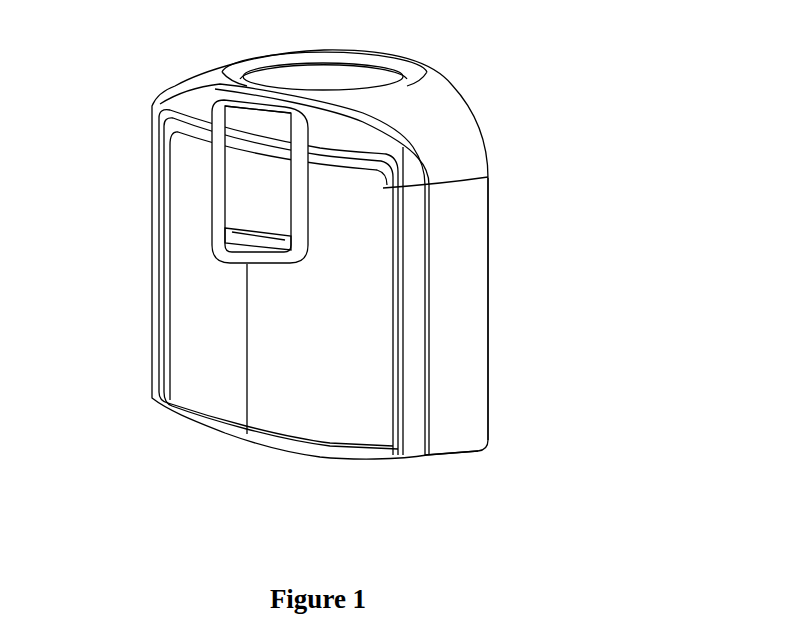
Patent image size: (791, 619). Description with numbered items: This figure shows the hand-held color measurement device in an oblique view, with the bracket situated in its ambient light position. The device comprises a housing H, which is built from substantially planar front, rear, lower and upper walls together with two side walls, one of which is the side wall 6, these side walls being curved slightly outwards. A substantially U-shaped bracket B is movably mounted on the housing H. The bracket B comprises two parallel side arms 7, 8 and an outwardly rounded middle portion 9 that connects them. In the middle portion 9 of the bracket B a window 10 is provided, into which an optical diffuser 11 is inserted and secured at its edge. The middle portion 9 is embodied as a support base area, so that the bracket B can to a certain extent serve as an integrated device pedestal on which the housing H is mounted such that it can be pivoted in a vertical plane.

The side wall 6 is at (333, 417).
The side arm 7 is at (477, 355).
The side arm 8 is at (150, 258).
The middle portion 9 is at (410, 100).
The window 10 is at (262, 60).
The optical diffuser 11 is at (317, 83).
The bracket B is at (458, 154).
The housing H is at (241, 367).